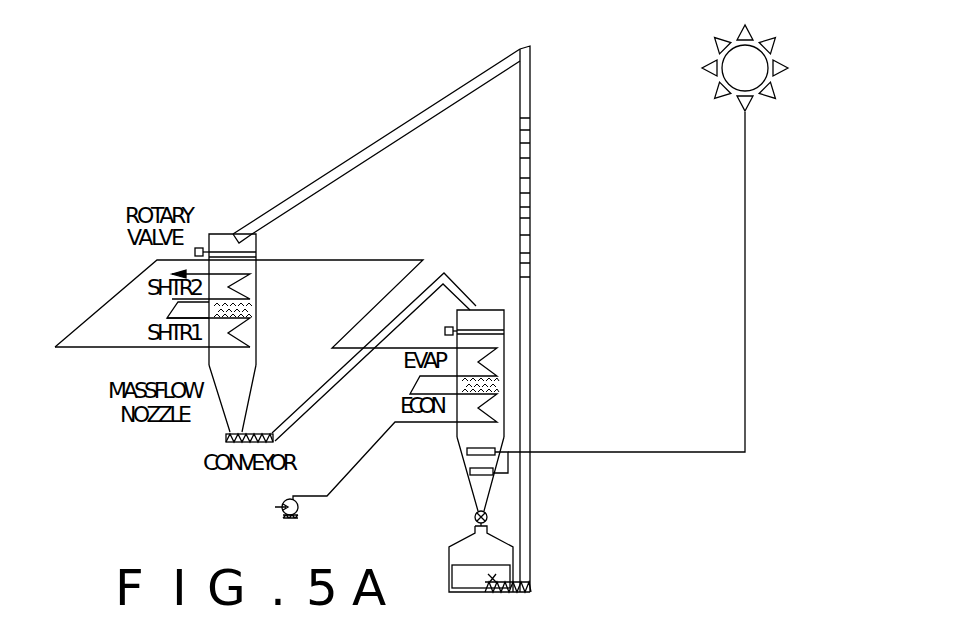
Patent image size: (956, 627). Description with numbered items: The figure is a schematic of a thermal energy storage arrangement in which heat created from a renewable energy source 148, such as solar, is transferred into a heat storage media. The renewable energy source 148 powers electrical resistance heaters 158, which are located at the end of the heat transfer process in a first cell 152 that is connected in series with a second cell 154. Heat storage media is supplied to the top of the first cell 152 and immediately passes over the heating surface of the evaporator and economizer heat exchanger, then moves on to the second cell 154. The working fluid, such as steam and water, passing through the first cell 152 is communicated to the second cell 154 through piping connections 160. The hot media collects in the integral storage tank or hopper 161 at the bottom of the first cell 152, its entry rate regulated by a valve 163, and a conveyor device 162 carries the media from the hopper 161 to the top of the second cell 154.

The renewable energy source 148 is at (745, 58).
The first cell 152 is at (507, 363).
The second cell 154 is at (257, 355).
The electrical resistance heaters 158 is at (490, 447).
The piping connections 160 is at (343, 260).
The media storage tank or hopper 161 is at (448, 558).
The conveyor device 162 is at (530, 87).
The valve 163 is at (473, 517).